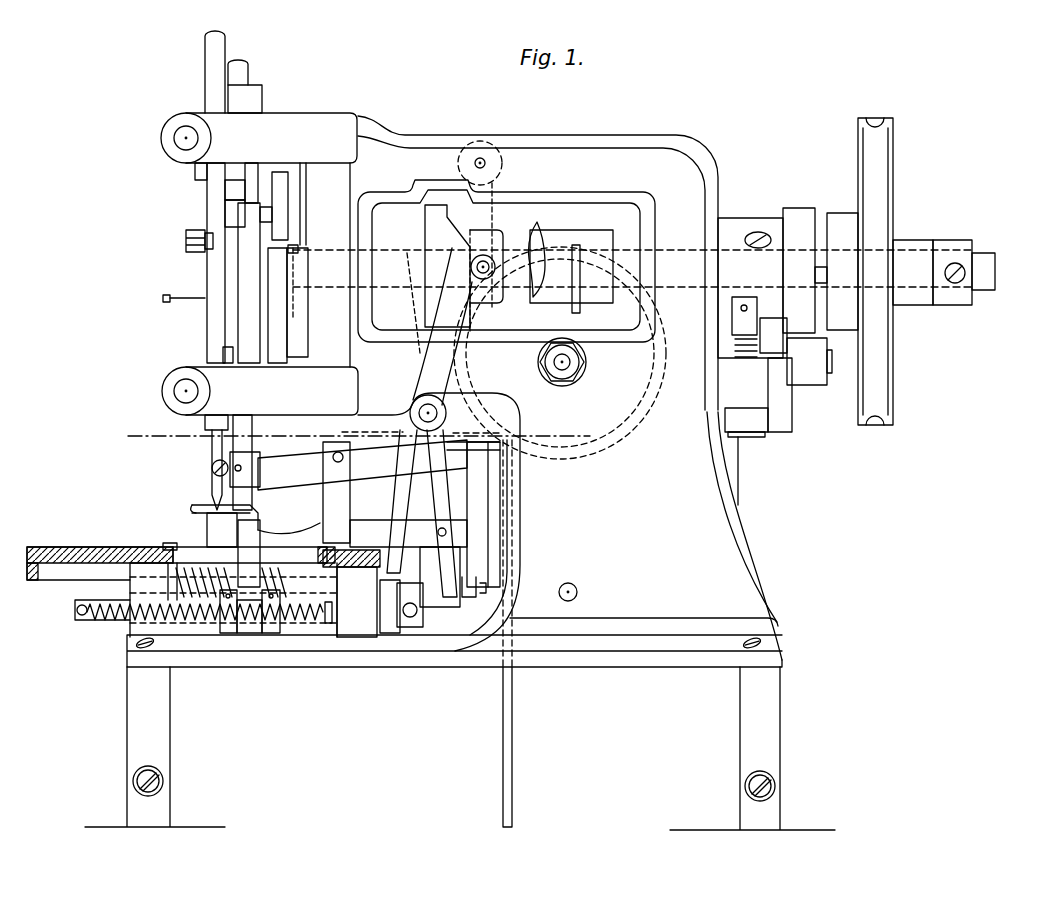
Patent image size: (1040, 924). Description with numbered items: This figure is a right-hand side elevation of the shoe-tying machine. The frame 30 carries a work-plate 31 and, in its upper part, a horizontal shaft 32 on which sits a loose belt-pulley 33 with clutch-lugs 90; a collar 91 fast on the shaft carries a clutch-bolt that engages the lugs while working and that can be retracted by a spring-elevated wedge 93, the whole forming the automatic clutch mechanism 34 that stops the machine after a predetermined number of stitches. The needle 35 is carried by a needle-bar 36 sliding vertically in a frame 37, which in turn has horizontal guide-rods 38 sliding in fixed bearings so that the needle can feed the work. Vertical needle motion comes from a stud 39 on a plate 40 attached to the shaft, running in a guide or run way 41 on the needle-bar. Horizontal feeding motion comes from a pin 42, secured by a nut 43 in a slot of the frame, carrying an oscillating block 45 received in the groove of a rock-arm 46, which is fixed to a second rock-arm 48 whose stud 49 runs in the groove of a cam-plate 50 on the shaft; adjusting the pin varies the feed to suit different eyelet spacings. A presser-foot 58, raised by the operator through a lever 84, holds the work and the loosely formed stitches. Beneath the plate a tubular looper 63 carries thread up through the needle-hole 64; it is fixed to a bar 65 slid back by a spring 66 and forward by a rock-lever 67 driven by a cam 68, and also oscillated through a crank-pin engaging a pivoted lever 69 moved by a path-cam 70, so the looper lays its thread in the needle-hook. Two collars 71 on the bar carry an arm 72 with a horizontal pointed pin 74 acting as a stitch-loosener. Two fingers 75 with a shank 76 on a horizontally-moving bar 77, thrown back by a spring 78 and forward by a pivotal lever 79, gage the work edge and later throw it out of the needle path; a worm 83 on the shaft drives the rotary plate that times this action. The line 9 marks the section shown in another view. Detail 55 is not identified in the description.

The section line 9 is at (354, 435).
The frame 30 is at (720, 537).
The work-plate 31 is at (80, 547).
The horizontal shaft 32 is at (375, 252).
The belt-pulley 33 is at (880, 187).
The automatic clutch mechanism 34 is at (820, 256).
The needle 35 is at (213, 450).
The needle-bar 36 is at (216, 82).
The frame 37 is at (212, 346).
The horizontal guide-rods 38 is at (178, 138).
The stud 39 is at (230, 225).
The plate 40 is at (252, 205).
The guide or run way 41 is at (232, 200).
The pin 42 is at (188, 242).
The nut 43 is at (200, 250).
The oscillating block 45 is at (262, 232).
The rock-arm 46 is at (244, 300).
The second rock-arm 48 is at (300, 350).
The stud 49 is at (292, 265).
The cam-plate 50 is at (285, 187).
The pin 55 is at (163, 298).
The presser-foot 58 is at (220, 515).
The tubular looper 63 is at (167, 547).
The elongated slot or needle-hole 64 is at (205, 542).
The bar 65 is at (77, 602).
The spring 66 is at (100, 622).
The rock-lever 67 is at (420, 485).
The cam 68 is at (455, 248).
The pivoted lever 69 is at (440, 512).
The path-cam 70 is at (426, 222).
The collars 71 is at (228, 625).
The arm 72 is at (252, 630).
The horizontal pointed pin 74 is at (252, 508).
The fingers 75 is at (292, 527).
The shank 76 is at (373, 522).
The horizontally-moving bar 77 is at (388, 575).
The spring 78 is at (290, 565).
The pivotal lever 79 is at (500, 472).
The worm 83 is at (560, 232).
The lever 84 is at (310, 457).
The clutch-lugs 90 is at (822, 272).
The collar 91 is at (733, 222).
The spring-elevated wedge 93 is at (790, 350).